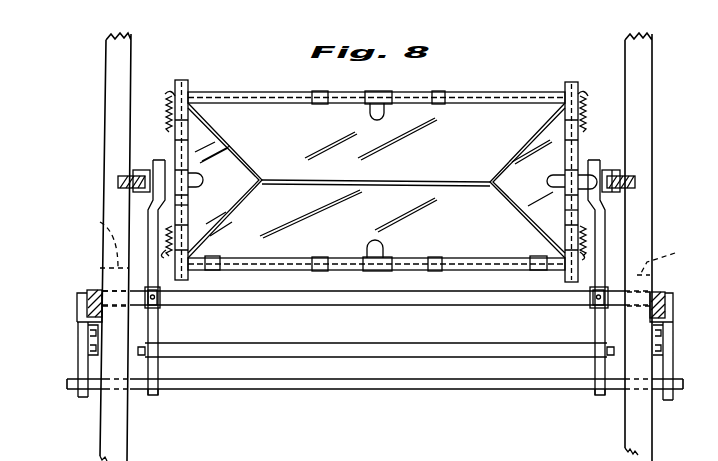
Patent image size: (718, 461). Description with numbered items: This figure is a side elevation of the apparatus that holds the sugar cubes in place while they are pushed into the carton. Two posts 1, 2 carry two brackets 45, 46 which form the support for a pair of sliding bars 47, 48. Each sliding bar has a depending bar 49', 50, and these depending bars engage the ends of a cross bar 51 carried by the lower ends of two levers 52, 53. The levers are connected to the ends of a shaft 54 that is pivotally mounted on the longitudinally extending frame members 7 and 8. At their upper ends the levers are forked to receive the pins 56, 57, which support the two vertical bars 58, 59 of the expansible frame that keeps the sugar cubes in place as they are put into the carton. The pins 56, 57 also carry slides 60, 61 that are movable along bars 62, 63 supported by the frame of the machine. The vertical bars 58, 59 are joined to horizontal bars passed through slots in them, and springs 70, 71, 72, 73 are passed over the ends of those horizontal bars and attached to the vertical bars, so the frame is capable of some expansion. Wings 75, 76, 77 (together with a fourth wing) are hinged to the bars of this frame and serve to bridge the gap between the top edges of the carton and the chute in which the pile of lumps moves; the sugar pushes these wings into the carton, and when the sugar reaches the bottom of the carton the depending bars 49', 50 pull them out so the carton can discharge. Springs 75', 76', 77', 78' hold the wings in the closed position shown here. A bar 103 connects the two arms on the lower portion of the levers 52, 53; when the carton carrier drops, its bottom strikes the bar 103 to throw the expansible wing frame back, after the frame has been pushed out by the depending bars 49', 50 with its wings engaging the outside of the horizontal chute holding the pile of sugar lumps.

The post 1 is at (118, 430).
The post 2 is at (634, 432).
The longitudinally extending frame member 7 is at (657, 271).
The longitudinally extending frame member 8 is at (104, 261).
The bracket 45 is at (78, 293).
The bracket 46 is at (675, 312).
The sliding bar 47 is at (97, 290).
The sliding bar 48 is at (660, 292).
The depending bar 49' is at (80, 377).
The depending bar 50 is at (667, 401).
The cross bar 51 is at (345, 388).
The lever 52 is at (152, 395).
The lever 53 is at (592, 395).
The shaft 54 is at (363, 297).
The pin 56 is at (186, 172).
The pin 57 is at (582, 165).
The vertical bar 58 is at (186, 214).
The vertical bar 59 is at (570, 210).
The slide 60 is at (135, 170).
The slide 61 is at (612, 170).
The bar 62 is at (118, 185).
The bar 63 is at (636, 182).
The spring 70 is at (163, 107).
The spring 71 is at (583, 115).
The spring 72 is at (172, 240).
The spring 73 is at (585, 252).
The wing 75 is at (225, 180).
The spring 75' is at (364, 156).
The wing 76 is at (350, 178).
The spring 76' is at (394, 112).
The wing 77 is at (527, 180).
The spring 77' is at (551, 164).
The spring 78' is at (394, 246).
The bar 103 is at (265, 344).